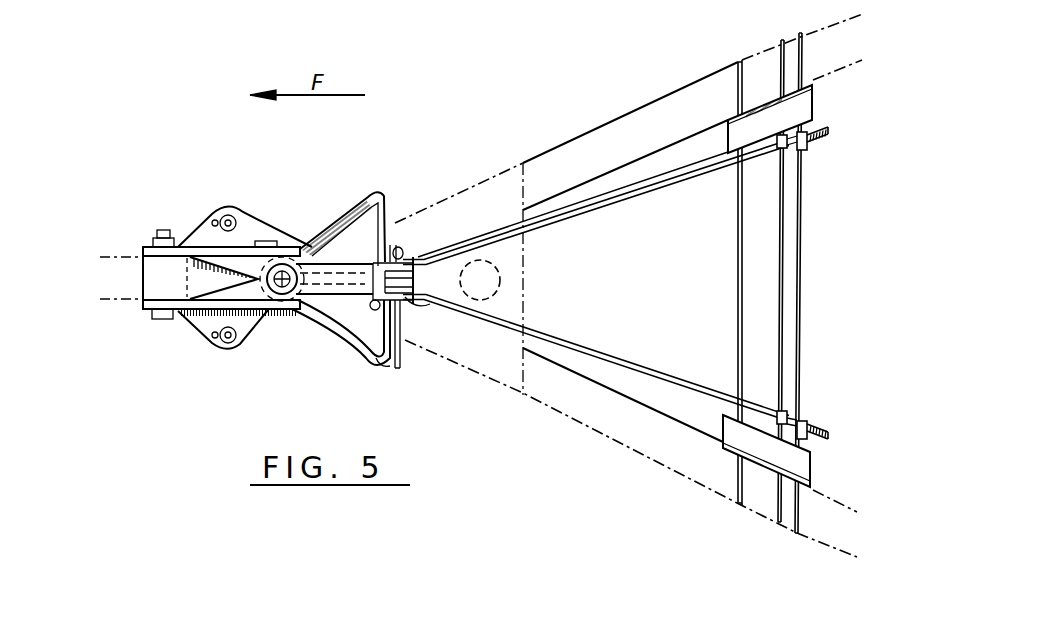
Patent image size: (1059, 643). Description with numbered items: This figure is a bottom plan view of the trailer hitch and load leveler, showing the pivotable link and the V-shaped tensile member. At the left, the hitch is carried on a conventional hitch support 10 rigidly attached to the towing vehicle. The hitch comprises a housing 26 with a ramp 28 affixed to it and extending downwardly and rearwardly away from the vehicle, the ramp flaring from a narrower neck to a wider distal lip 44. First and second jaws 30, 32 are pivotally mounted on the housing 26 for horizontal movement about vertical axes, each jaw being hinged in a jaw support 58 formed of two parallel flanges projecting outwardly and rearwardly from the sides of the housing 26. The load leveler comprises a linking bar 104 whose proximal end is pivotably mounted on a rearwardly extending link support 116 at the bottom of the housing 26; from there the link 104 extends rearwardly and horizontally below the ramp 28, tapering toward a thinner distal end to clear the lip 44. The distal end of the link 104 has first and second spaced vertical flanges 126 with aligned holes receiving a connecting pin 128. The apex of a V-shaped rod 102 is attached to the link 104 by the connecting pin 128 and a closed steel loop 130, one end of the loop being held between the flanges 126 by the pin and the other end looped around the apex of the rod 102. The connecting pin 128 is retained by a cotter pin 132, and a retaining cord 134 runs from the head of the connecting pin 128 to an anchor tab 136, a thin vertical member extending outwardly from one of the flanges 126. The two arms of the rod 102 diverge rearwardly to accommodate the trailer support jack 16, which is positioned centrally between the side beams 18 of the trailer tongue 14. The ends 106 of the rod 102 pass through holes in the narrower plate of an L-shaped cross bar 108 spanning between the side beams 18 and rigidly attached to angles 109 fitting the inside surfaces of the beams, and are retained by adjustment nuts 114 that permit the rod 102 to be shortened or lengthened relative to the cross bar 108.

The hitch support 10 is at (142, 256).
The jaw support 58 is at (205, 238).
The housing 26 is at (203, 307).
The first jaw 30 is at (287, 237).
The second jaw 32 is at (248, 340).
The linking bar 104 is at (318, 240).
The link support 116 is at (264, 300).
The ramp 28 is at (372, 198).
The lip 44 is at (393, 240).
The connecting pin 128 is at (402, 250).
The anchor tab 136 is at (361, 305).
The cotter pin 132 is at (391, 363).
The retaining cord 134 is at (368, 374).
The trailer support jack 16 is at (500, 288).
The trailer tongue 14 is at (598, 100).
The side beams 18 is at (724, 74).
The cross bar 108 is at (800, 292).
The angle 109 is at (727, 148).
The loop 130 is at (442, 258).
The V-shaped rod 102 is at (595, 350).
The vertical flanges 126 is at (432, 306).
The adjustment nuts 114 is at (805, 150).
The rod ends 106 is at (831, 129).